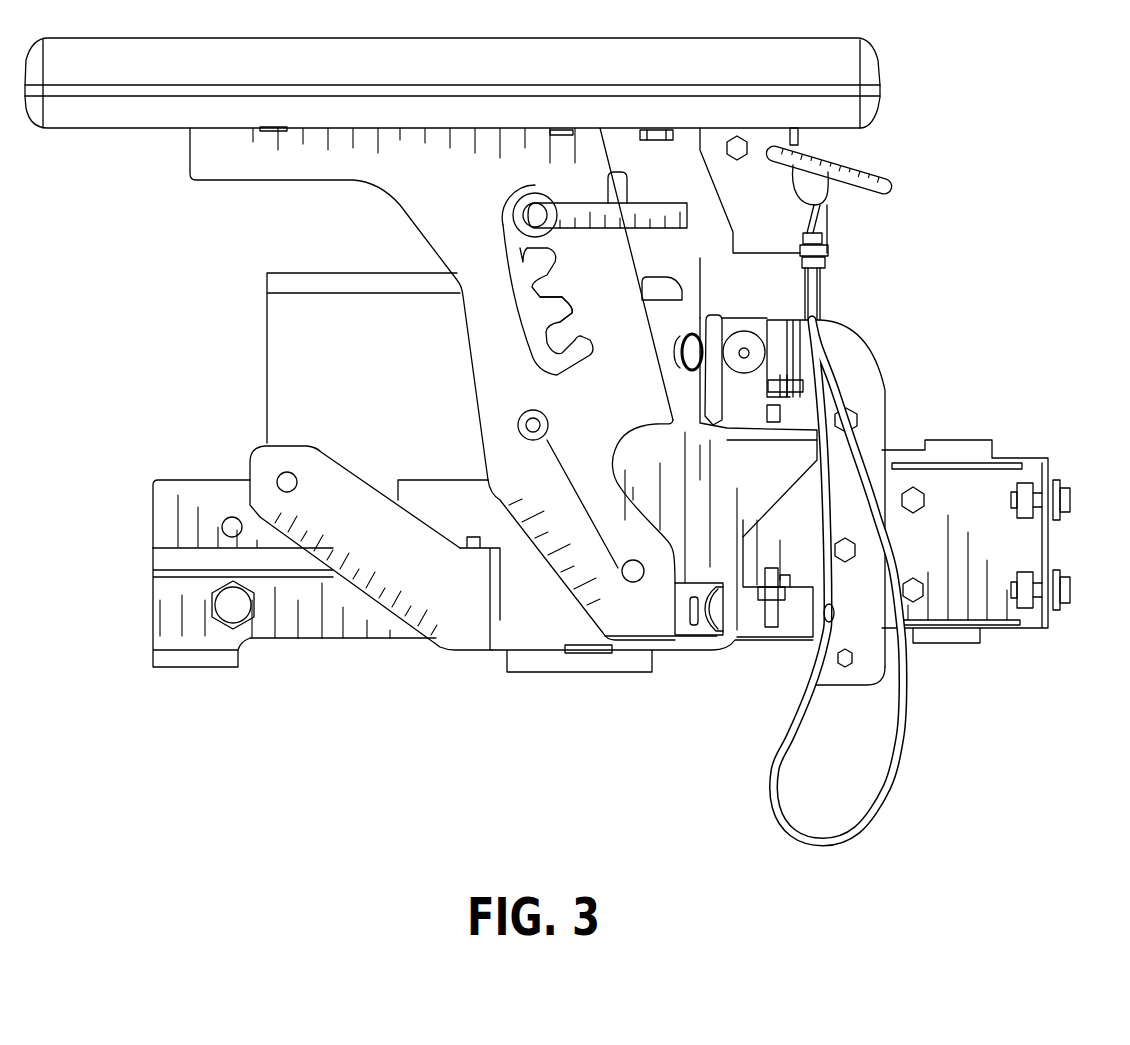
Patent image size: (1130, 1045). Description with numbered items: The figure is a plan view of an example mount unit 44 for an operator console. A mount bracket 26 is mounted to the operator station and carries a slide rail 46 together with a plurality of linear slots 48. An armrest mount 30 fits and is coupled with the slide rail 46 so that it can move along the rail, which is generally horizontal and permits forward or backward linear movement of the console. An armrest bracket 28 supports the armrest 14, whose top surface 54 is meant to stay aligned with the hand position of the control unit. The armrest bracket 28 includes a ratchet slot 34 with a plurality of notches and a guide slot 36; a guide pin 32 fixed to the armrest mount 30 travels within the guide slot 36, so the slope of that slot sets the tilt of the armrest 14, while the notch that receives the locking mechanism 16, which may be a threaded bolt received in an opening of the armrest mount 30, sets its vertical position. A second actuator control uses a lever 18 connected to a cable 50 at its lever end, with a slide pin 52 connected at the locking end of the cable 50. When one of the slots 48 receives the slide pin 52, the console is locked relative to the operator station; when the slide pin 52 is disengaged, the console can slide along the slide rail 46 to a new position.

The armrest 14 is at (491, 77).
The locking mechanism 16 is at (535, 213).
The lever 18 is at (893, 188).
The mount bracket 26 is at (168, 607).
The armrest bracket 28 is at (667, 610).
The armrest mount 30 is at (518, 425).
The guide pin 32 is at (528, 340).
The ratchet slot 34 is at (580, 309).
The guide slot 36 is at (624, 584).
The mount unit 44 is at (1014, 178).
The slide rail 46 is at (173, 563).
The linear slots 48 is at (692, 350).
The cable 50 is at (907, 707).
The slide pin 52 is at (746, 343).
The top surface 54 is at (811, 549).